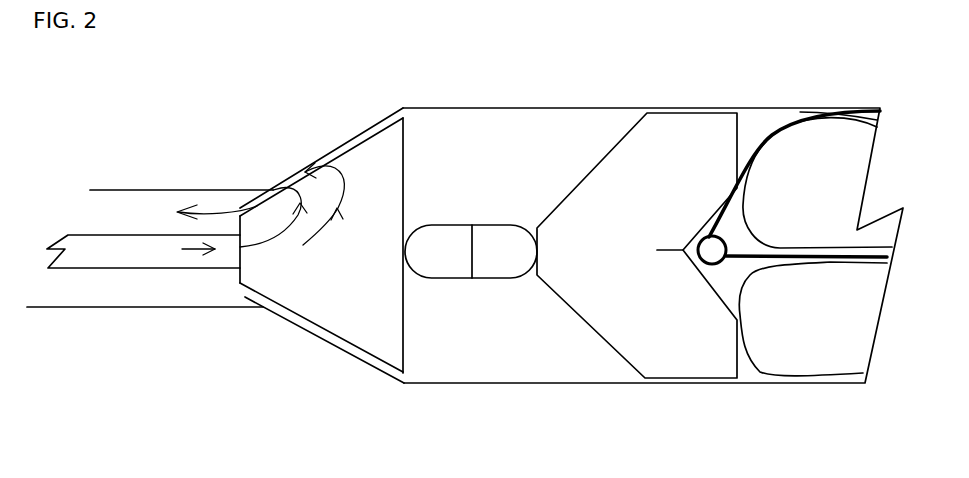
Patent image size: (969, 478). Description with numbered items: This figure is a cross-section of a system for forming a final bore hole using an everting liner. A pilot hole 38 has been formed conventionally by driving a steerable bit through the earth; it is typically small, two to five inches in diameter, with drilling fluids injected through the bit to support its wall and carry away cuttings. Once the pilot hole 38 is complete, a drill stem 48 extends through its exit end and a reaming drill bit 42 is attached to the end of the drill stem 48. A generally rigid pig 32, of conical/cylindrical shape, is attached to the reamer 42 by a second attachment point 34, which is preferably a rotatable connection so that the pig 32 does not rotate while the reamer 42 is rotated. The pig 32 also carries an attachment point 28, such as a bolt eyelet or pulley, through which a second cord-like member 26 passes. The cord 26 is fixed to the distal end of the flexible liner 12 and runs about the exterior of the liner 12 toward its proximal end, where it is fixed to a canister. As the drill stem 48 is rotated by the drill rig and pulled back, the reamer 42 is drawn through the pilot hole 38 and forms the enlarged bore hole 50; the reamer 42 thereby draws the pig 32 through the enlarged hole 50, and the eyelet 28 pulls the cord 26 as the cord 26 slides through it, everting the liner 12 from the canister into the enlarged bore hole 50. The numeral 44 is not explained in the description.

The liner 12 is at (760, 373).
The second cord-like member 26 is at (783, 120).
The attachment point 28 is at (690, 270).
The pig 32 is at (673, 167).
The second attachment point 34 is at (493, 258).
The pilot hole 38 is at (129, 212).
The reaming drill bit 42 is at (320, 277).
The inlet 44 is at (250, 284).
The drill stem 48 is at (82, 255).
The enlarged bore hole 50 is at (477, 145).